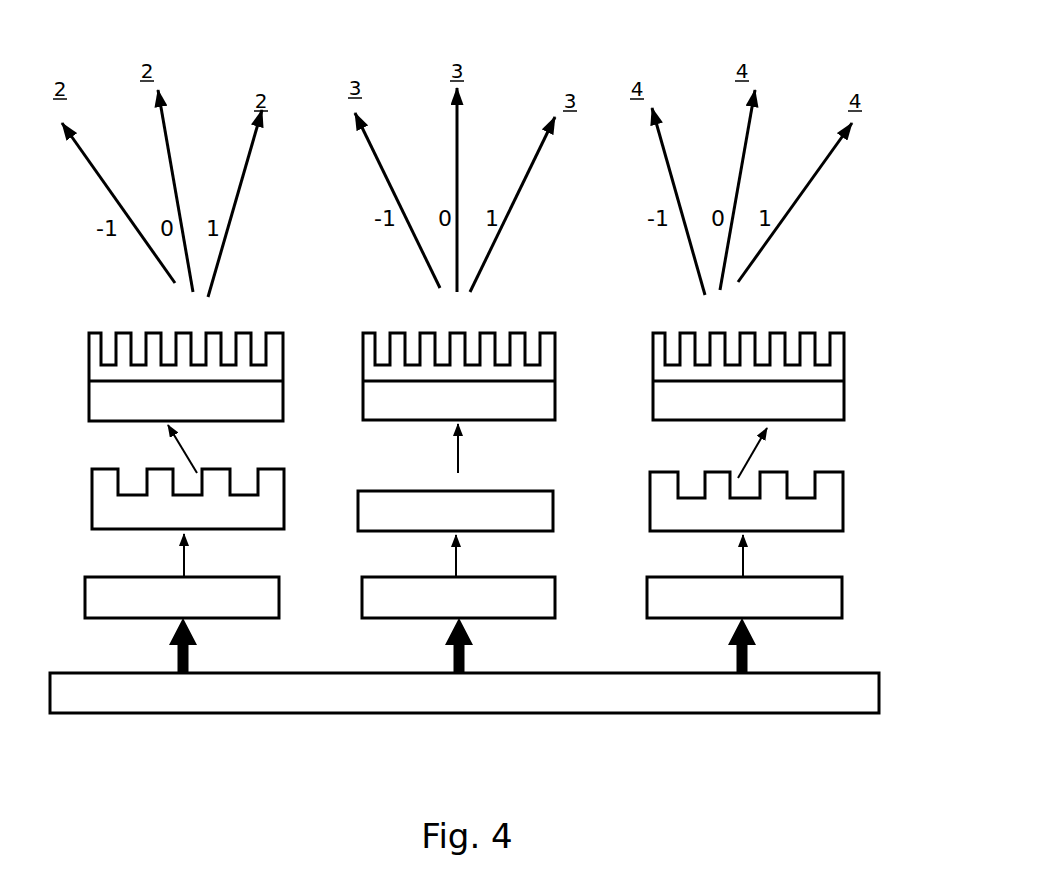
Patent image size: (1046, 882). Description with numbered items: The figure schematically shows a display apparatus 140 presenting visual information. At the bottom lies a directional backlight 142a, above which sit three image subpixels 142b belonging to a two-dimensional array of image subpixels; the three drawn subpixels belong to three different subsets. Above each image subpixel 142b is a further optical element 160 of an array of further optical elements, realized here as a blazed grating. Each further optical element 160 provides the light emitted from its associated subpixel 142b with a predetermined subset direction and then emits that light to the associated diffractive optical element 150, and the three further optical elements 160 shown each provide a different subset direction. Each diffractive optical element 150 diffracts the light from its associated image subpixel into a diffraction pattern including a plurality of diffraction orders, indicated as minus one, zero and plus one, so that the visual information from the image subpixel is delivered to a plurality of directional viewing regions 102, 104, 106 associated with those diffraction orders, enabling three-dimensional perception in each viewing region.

The directional viewing region 102 is at (373, 163).
The directional viewing region 104 is at (447, 152).
The directional viewing region 106 is at (538, 170).
The diffractive optical element 150 is at (877, 391).
The further optical element 160 is at (882, 507).
The image subpixel 142b is at (877, 600).
The directional backlight 142a is at (414, 705).
The display apparatus 140 is at (161, 747).